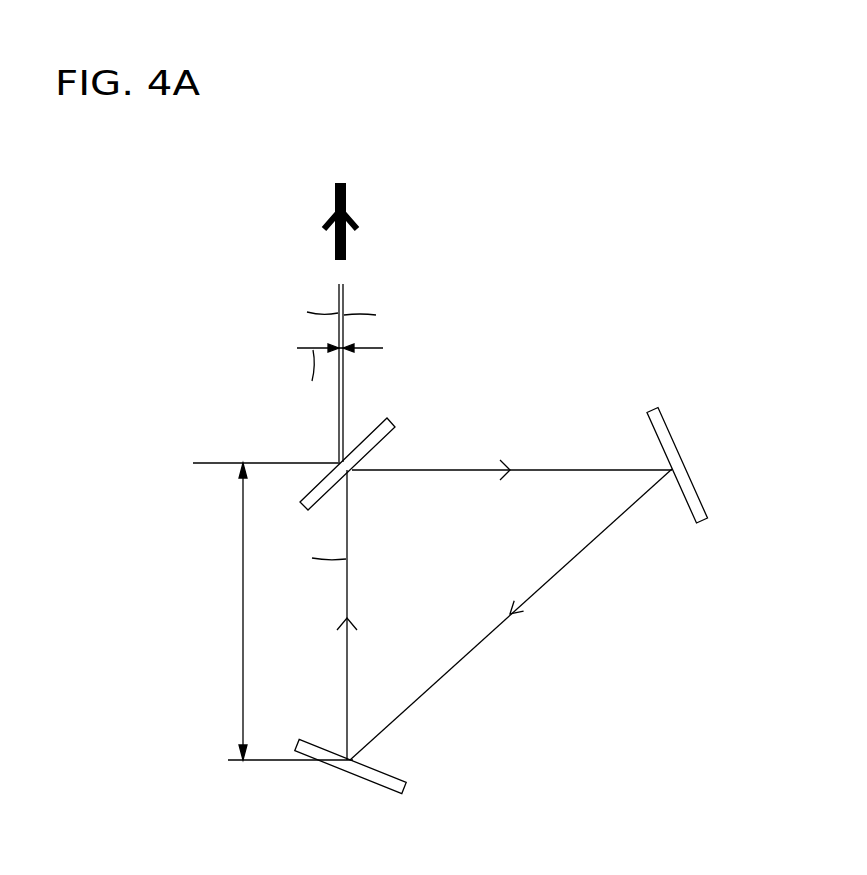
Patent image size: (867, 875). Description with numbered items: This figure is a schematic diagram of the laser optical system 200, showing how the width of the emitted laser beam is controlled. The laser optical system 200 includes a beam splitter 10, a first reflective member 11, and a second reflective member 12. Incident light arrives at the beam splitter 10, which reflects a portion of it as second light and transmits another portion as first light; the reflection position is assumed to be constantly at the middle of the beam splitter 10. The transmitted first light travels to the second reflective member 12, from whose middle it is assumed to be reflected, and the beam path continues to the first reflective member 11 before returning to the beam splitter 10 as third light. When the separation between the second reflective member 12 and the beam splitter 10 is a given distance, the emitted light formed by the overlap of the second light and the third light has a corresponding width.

The laser optical system 200 is at (620, 336).
The beam splitter 10 is at (377, 440).
The first reflective member 11 is at (685, 462).
The second reflective member 12 is at (343, 775).